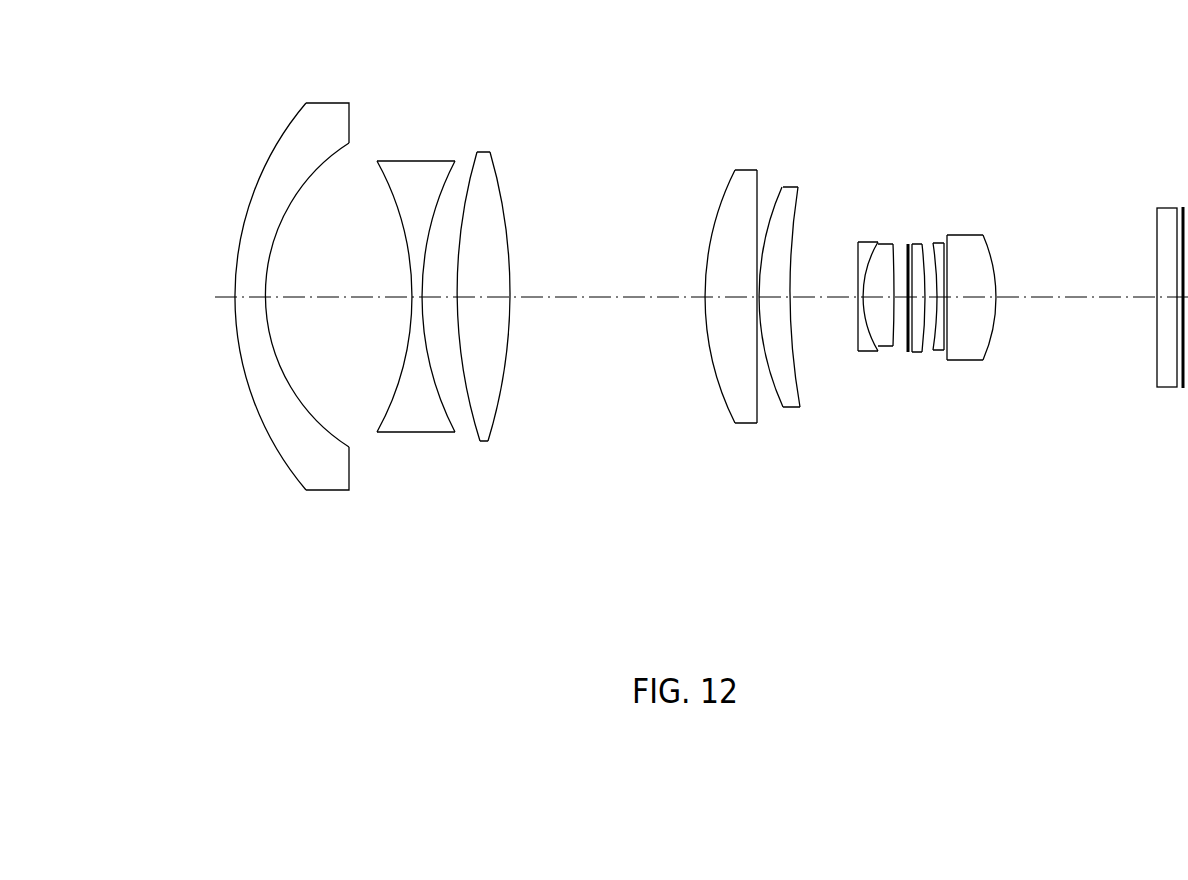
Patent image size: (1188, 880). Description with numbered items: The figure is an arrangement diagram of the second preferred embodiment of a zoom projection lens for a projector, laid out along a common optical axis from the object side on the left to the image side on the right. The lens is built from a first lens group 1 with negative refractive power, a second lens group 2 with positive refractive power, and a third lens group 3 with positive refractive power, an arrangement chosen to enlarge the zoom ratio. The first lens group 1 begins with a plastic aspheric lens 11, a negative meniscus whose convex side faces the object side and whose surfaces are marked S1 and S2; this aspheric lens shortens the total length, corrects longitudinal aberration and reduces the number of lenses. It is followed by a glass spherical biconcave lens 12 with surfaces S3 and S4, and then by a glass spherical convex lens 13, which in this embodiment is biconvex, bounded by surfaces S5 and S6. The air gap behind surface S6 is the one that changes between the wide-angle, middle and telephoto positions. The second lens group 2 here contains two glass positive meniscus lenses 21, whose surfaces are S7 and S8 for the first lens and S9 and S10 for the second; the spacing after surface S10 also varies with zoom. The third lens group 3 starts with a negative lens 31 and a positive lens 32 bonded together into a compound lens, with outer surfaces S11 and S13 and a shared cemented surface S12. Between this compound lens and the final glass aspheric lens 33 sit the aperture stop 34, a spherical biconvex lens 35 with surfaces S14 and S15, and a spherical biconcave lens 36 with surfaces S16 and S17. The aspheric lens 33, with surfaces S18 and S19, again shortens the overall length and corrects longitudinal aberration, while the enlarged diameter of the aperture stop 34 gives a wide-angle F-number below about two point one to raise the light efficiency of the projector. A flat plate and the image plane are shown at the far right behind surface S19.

The first lens group 1 is at (512, 583).
The second lens group 2 is at (798, 583).
The third lens group 3 is at (994, 582).
The plastic aspheric lens 11 is at (296, 293).
The glass spherical biconcave lens 12 is at (413, 260).
The glass spherical convex lens 13 is at (493, 259).
The glass spherical convex lens 21 is at (753, 260).
The negative lens 31 is at (854, 267).
The positive lens 32 is at (888, 270).
The glass aspheric lens 33 is at (1025, 330).
The aperture stop 34 is at (934, 302).
The spherical biconvex lens 35 is at (912, 353).
The spherical biconcave lens 36 is at (994, 312).
The surface S1 is at (285, 123).
The surface S2 is at (336, 170).
The surface S3 is at (385, 178).
The surface S4 is at (462, 173).
The surface S5 is at (480, 175).
The surface S6 is at (503, 163).
The surface S7 is at (727, 183).
The surface S8 is at (777, 193).
The surface S9 is at (775, 193).
The surface S10 is at (803, 187).
The surface S11 is at (857, 253).
The surface S12 is at (875, 250).
The surface S13 is at (892, 245).
The surface S14 is at (912, 243).
The surface S15 is at (927, 250).
The surface S16 is at (932, 247).
The surface S17 is at (950, 247).
The surface S18 is at (950, 260).
The surface S19 is at (993, 277).